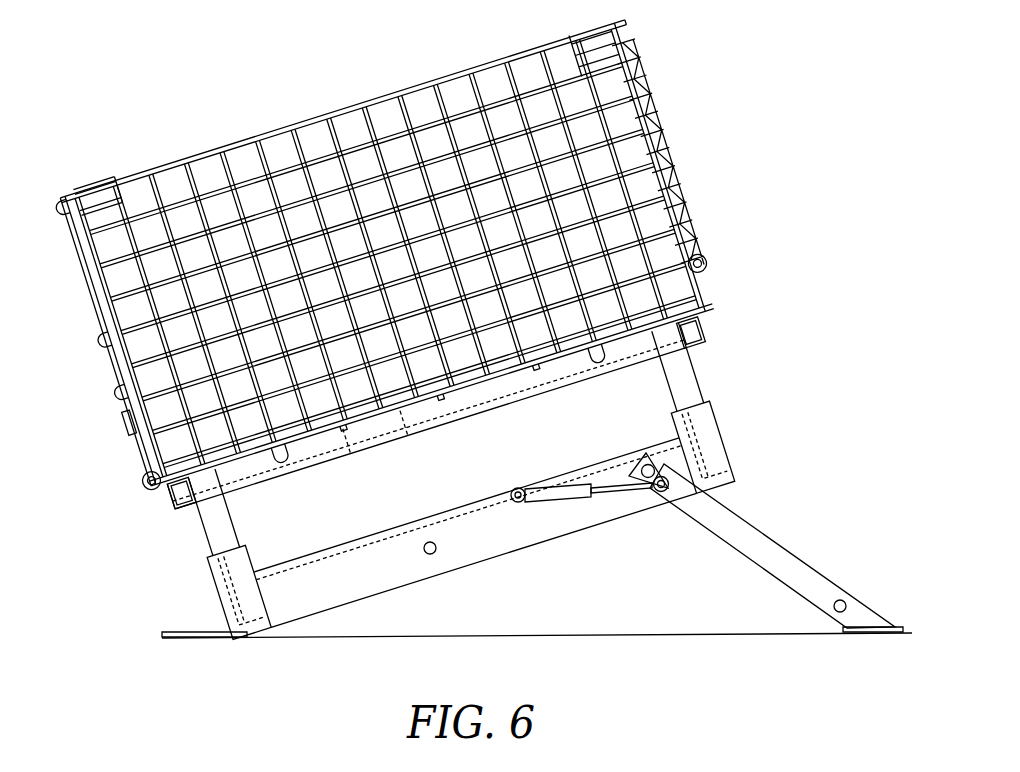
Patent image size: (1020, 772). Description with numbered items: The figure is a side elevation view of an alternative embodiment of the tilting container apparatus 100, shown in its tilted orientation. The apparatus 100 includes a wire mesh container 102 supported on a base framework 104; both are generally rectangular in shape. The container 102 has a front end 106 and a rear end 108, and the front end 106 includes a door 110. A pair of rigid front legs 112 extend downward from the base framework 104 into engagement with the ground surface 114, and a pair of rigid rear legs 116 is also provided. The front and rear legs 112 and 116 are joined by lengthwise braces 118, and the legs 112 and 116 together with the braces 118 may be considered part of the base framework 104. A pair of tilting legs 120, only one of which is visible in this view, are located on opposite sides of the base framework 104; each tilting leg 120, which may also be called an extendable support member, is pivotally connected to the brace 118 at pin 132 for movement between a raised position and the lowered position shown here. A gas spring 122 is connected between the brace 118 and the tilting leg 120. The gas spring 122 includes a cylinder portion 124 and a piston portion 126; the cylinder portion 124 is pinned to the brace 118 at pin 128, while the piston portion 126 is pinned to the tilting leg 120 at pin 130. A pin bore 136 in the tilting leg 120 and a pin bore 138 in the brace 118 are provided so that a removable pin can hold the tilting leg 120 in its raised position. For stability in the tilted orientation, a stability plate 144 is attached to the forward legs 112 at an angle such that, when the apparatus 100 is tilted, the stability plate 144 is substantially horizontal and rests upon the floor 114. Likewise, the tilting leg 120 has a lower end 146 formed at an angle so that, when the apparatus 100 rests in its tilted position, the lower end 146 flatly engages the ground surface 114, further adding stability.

The tilting container apparatus 100 is at (313, 73).
The wire mesh container 102 is at (438, 72).
The base framework 104 is at (680, 333).
The front end 106 is at (137, 433).
The rear end 108 is at (685, 208).
The door 110 is at (93, 287).
The front legs 112 is at (215, 528).
The ground surface 114 is at (440, 637).
The rear legs 116 is at (688, 377).
The lengthwise braces 118 is at (345, 557).
The tilting leg 120 is at (750, 535).
The gas spring 122 is at (605, 530).
The cylinder portion 124 is at (545, 500).
The piston portion 126 is at (607, 495).
The pin 128 is at (520, 490).
The pin 130 is at (672, 488).
The pin 132 is at (687, 447).
The pin bore 136 is at (842, 602).
The pin bore 138 is at (432, 556).
The stability plate 144 is at (185, 633).
The lower end 146 is at (873, 633).